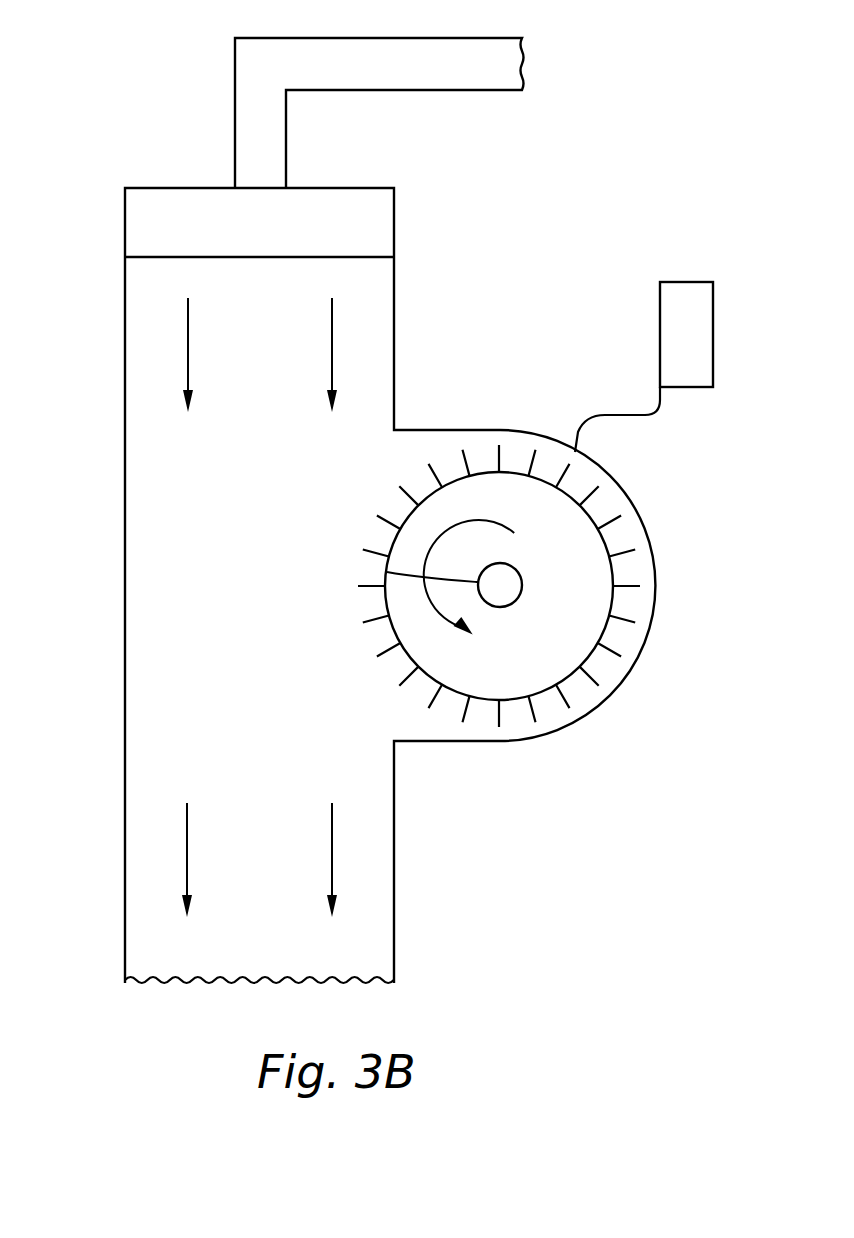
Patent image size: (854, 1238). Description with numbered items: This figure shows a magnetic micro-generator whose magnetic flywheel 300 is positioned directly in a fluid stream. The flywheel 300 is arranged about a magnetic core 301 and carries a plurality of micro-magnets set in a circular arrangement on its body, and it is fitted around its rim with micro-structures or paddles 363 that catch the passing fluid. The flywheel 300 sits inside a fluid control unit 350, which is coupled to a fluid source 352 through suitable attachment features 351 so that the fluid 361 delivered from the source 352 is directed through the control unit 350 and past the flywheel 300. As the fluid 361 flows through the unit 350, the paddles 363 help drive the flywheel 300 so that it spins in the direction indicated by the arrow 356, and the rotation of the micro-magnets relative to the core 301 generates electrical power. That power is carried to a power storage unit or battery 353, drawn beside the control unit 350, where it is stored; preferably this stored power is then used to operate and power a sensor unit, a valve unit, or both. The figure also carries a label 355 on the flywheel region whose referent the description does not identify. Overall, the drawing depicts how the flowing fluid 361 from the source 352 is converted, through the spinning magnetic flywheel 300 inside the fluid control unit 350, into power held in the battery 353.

The fluid control unit 350 is at (95, 149).
The attachment features 351 is at (396, 221).
The fluid source 352 is at (448, 72).
The power storage unit or battery 353 is at (715, 330).
The micro-structures or paddles 363 is at (412, 493).
The magnetic flywheel 300 is at (568, 545).
The magnetic core 301 is at (500, 585).
The wheel surface 355 is at (572, 623).
The arrow 356 is at (387, 572).
The fluid 361 is at (332, 852).